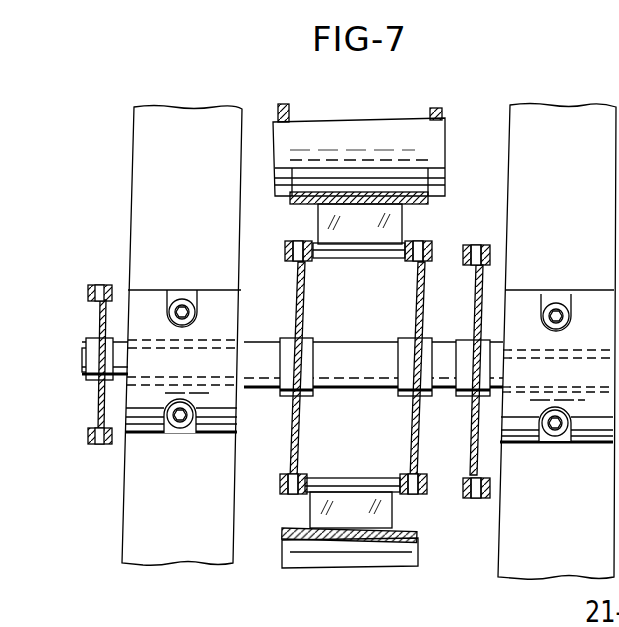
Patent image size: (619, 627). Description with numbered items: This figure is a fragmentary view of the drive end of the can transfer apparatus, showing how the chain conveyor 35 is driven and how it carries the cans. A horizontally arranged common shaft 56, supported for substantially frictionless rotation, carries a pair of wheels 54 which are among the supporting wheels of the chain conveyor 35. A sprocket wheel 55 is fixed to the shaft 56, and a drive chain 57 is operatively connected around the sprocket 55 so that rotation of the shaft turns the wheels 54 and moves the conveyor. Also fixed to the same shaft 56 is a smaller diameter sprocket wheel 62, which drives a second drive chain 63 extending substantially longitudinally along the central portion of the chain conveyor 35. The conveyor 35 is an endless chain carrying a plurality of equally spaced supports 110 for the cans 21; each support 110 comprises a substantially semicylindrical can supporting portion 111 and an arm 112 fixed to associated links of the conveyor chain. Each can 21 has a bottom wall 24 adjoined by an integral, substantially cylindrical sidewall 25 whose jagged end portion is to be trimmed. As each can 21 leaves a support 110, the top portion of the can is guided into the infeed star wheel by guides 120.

The can 21 is at (359, 136).
The bottom wall 24 is at (468, 159).
The sidewall 25 is at (358, 108).
The chain conveyor 35 is at (266, 512).
The wheels 54 is at (356, 367).
The sprocket wheel 55 is at (507, 381).
The common shaft 56 is at (292, 344).
The drive chain 57 is at (509, 246).
The smaller diameter sprocket wheel 62 is at (68, 357).
The second drive chain 63 is at (78, 456).
The support 110 is at (405, 388).
The can supporting portion 111 is at (350, 579).
The arm 112 is at (338, 406).
The guides 120 is at (369, 90).